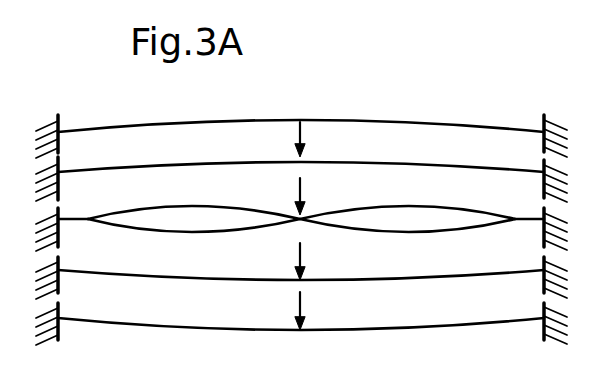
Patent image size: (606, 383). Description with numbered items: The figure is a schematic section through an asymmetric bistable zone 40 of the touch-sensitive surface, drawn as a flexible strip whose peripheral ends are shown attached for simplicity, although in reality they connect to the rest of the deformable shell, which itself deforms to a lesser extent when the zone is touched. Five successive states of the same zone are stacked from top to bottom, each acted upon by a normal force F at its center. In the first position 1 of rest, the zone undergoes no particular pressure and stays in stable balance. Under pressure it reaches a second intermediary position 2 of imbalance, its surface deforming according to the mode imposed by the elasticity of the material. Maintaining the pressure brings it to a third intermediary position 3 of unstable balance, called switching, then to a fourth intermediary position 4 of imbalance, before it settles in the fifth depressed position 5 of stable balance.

The bistable zone 40 is at (407, 86).
The first position of rest 1 is at (301, 136).
The second intermediary position of imbalance 2 is at (301, 186).
The third intermediary position of unstable balance 3 is at (301, 243).
The fourth intermediary position of imbalance 4 is at (301, 293).
The fifth depressed position 5 is at (301, 325).